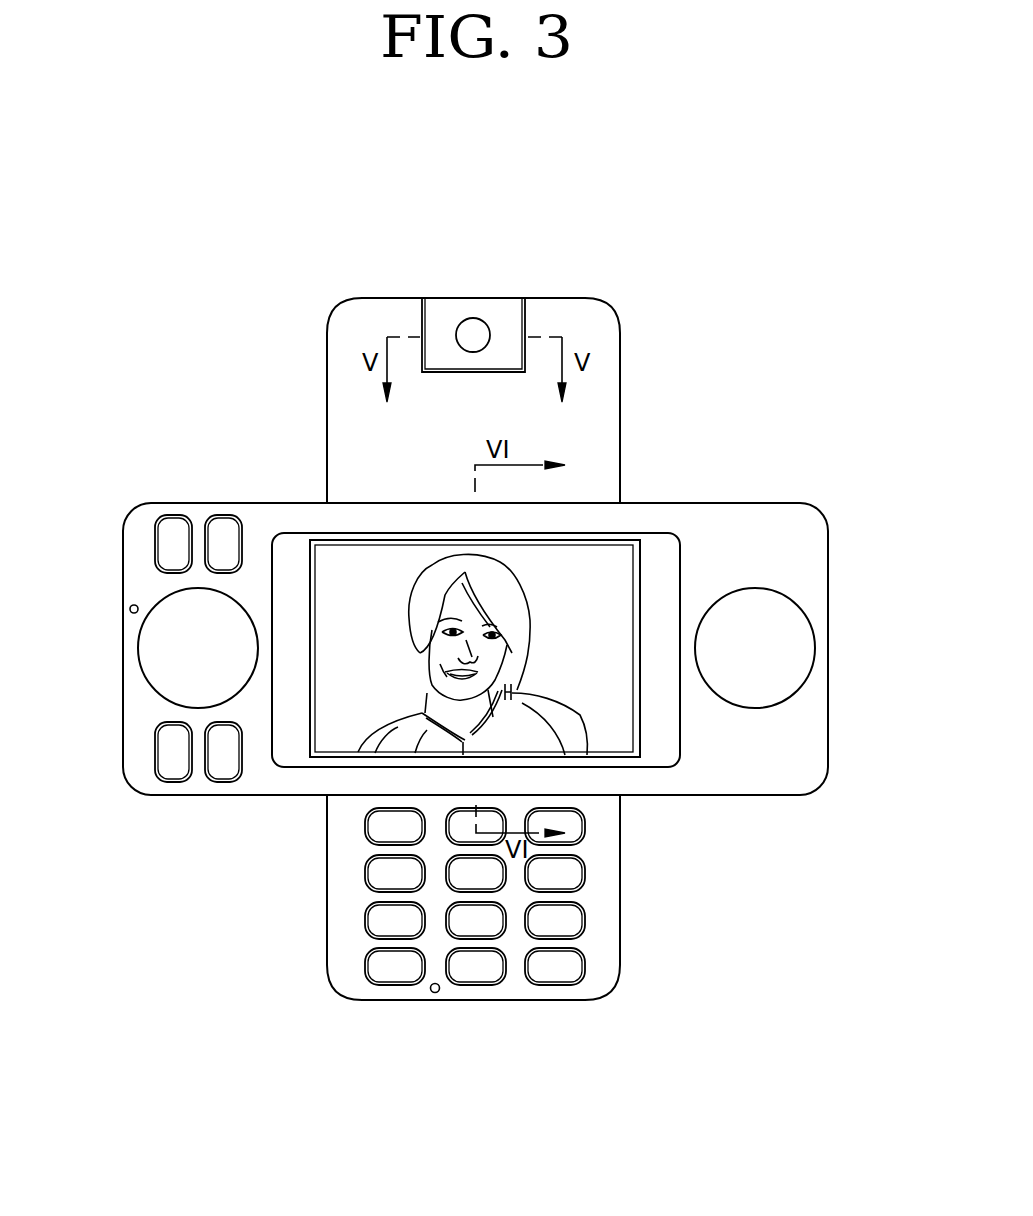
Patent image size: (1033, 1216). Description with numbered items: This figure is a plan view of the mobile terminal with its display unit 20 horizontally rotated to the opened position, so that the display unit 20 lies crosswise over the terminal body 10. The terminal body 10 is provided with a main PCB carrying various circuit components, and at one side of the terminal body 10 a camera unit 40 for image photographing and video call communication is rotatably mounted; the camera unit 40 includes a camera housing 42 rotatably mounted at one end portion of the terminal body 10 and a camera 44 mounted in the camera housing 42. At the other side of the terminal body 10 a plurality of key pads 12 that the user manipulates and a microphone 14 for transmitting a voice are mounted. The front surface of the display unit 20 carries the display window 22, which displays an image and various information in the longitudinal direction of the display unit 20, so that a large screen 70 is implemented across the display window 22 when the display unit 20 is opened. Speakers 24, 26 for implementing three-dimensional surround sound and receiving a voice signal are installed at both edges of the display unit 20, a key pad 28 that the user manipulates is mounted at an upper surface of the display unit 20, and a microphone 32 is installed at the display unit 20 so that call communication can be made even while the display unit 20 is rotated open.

The terminal body 10 is at (602, 393).
The key pads 12 is at (555, 972).
The microphone 14 is at (435, 993).
The display unit 20 is at (800, 548).
The display window 22 is at (662, 740).
The speaker 24 is at (792, 649).
The speaker 26 is at (172, 658).
The key pad 28 is at (172, 750).
The microphone 32 is at (128, 609).
The camera unit 40 is at (550, 301).
The camera housing 42 is at (433, 313).
The camera 44 is at (476, 291).
The large screen 70 is at (597, 573).